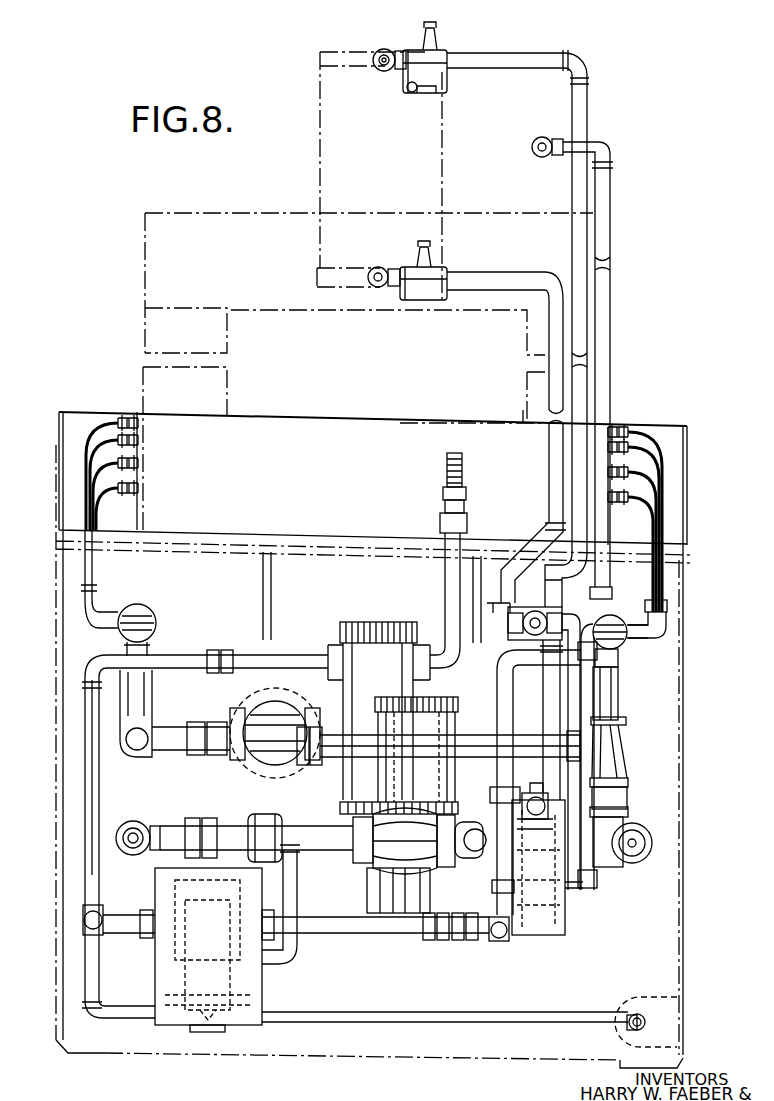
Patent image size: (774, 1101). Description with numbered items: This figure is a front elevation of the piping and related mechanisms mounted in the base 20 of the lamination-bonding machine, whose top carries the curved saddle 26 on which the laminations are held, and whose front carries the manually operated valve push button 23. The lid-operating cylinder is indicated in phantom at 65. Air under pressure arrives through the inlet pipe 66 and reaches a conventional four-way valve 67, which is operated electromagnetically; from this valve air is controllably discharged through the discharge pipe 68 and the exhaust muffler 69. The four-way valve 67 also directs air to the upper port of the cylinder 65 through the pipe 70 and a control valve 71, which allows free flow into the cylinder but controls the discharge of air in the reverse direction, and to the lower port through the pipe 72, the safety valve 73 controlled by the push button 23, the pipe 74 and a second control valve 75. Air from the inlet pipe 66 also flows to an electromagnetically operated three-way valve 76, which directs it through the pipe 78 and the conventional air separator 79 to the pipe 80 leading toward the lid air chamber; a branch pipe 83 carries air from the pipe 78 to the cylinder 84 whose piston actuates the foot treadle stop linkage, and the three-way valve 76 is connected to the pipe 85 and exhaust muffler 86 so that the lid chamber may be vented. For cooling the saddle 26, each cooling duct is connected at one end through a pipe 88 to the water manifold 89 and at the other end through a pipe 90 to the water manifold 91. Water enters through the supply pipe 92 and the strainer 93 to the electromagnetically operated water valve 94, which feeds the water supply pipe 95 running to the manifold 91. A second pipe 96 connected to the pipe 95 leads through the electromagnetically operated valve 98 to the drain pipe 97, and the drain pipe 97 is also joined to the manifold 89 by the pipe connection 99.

The base 20 is at (684, 793).
The manually operated valve push button 23 is at (525, 628).
The curved saddle 26 is at (141, 517).
The cylinder 65 is at (445, 181).
The pipe 66 is at (568, 144).
The four-way valve 67 is at (490, 868).
The discharge pipe 68 is at (536, 795).
The exhaust muffler 69 is at (567, 918).
The pipe 70 is at (592, 107).
The control valve 71 is at (440, 50).
The pipe 72 is at (596, 748).
The safety valve 73 is at (548, 612).
The pipe 74 is at (547, 393).
The control valve 75 is at (440, 267).
The three-way valve 76 is at (155, 975).
The pipe 78 is at (88, 800).
The air separator 79 is at (372, 622).
The pipe 80 is at (445, 574).
The pipe 83 is at (85, 975).
The cylinder 84 is at (670, 992).
The pipe 85 is at (298, 890).
The exhaust muffler 86 is at (253, 1030).
The pipe 88 is at (93, 487).
The water manifold 89 is at (141, 609).
The pipe 90 is at (663, 497).
The water manifold 91 is at (616, 618).
The supply pipe 92 is at (148, 858).
The strainer 93 is at (205, 830).
The water valve 94 is at (443, 703).
The water supply pipe 95 is at (618, 702).
The second pipe 96 is at (474, 737).
The drain pipe 97 is at (183, 757).
The electromagnetically operated valve 98 is at (273, 775).
The pipe connection 99 is at (152, 690).